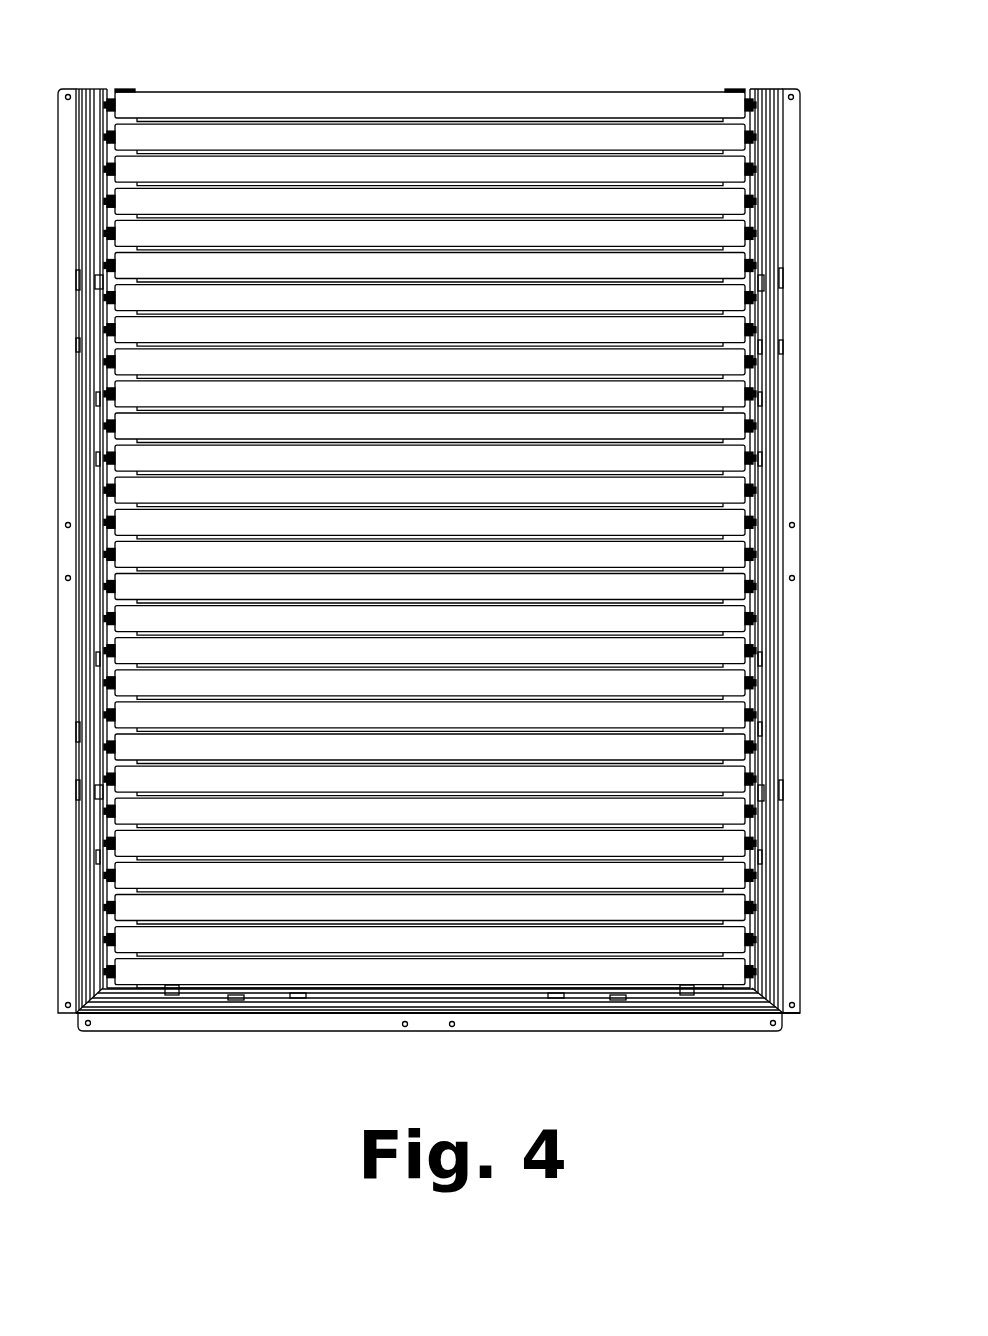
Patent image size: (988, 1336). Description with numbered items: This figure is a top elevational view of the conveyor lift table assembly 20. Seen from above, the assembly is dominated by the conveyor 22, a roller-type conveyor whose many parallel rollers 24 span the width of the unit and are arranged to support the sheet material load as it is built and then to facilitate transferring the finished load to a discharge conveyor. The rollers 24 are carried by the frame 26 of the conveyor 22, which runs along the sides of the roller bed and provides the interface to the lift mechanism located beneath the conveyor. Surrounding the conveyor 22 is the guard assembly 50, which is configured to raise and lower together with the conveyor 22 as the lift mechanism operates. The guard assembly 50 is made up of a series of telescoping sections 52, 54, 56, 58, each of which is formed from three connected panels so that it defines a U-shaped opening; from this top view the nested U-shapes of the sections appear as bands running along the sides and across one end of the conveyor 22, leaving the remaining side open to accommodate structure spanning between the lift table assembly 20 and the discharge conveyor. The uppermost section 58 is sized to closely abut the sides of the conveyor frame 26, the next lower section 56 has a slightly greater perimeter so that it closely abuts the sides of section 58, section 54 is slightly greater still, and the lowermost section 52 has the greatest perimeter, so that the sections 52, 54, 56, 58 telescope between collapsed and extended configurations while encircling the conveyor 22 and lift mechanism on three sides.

The lift table assembly 20 is at (477, 523).
The conveyor 22 is at (505, 92).
The rollers 24 is at (652, 140).
The frame 26 is at (823, 551).
The guard assembly 50 is at (823, 549).
The lowermost guard section 52 is at (785, 608).
The guard section 54 is at (778, 566).
The guard section 56 is at (775, 503).
The uppermost guard section 58 is at (769, 470).